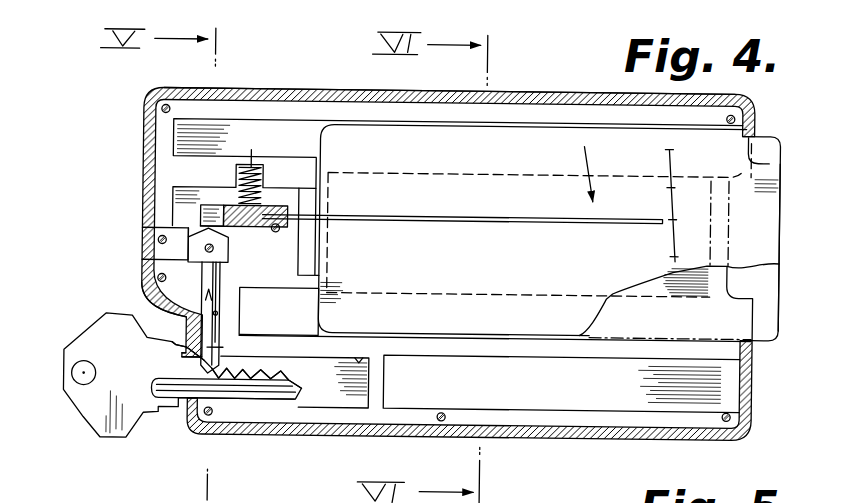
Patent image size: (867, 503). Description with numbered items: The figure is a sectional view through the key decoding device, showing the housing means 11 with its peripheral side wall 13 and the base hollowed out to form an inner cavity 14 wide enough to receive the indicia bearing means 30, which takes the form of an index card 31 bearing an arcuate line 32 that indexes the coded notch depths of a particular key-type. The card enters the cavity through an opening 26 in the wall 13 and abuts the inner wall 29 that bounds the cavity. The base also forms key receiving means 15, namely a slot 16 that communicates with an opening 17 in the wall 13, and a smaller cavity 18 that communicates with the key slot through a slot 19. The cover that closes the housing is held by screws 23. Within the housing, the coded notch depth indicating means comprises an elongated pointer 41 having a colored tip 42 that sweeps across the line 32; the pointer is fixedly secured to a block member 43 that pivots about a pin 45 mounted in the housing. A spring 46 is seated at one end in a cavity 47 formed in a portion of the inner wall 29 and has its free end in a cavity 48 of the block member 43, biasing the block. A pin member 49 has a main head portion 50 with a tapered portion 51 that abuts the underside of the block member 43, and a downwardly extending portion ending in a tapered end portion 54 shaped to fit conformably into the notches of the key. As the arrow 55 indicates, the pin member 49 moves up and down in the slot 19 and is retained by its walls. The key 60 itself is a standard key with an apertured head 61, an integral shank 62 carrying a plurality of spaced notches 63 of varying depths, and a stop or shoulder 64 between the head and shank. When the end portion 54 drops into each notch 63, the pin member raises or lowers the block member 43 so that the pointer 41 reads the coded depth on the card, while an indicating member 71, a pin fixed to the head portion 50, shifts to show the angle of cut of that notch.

The housing means 11 is at (128, 114).
The peripheral side wall 13 is at (335, 91).
The inner cavity 14 is at (545, 126).
The key receiving means 15 is at (351, 384).
The slot 16 is at (360, 362).
The opening 17 is at (183, 403).
The cavity 18 is at (318, 276).
The slot 19 is at (219, 316).
The screws 23 is at (172, 111).
The opening 26 is at (780, 157).
The inner wall 29 is at (317, 240).
The indicia bearing means 30 is at (776, 127).
The index card 31 is at (522, 322).
The arcuate line 32 is at (657, 263).
The pointer 41 is at (490, 216).
The tip 42 is at (634, 216).
The block member 43 is at (208, 210).
The pin 45 is at (281, 262).
The spring 46 is at (256, 166).
The cavity 47 is at (262, 182).
The cavity 48 is at (262, 207).
The pin member 49 is at (222, 350).
The main head portion 50 is at (188, 238).
The tapered portion 51 is at (207, 233).
The end portion 54 is at (208, 370).
The arrow 55 is at (198, 320).
The key 60 is at (90, 416).
The head 61 is at (105, 356).
The shank 62 is at (254, 402).
The notches 63 is at (222, 368).
The shoulder 64 is at (183, 356).
The indicating member 71 is at (148, 261).